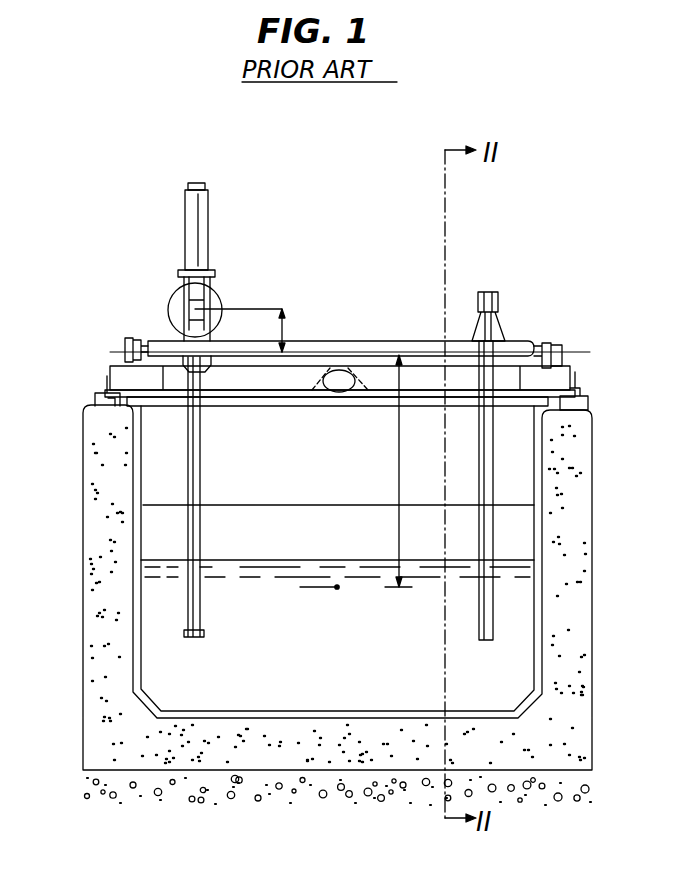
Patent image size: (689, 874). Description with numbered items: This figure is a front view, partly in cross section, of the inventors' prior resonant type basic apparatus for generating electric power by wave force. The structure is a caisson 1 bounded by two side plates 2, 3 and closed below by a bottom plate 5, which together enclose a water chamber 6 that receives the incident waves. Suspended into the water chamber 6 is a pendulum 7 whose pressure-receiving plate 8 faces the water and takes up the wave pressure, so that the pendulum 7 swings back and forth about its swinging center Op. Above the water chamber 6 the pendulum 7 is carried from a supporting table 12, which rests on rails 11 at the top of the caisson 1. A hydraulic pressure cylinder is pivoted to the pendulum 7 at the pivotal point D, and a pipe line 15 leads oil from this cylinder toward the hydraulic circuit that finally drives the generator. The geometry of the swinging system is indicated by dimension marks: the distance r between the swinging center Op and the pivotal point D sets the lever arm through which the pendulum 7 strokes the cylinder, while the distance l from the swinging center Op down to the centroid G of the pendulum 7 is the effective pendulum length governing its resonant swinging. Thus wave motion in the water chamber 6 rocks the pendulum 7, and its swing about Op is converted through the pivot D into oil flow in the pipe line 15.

The caisson 1 is at (338, 630).
The side plate 2 is at (577, 523).
The side plate 3 is at (103, 508).
The bottom plate 5 is at (185, 752).
The water chamber 6 is at (302, 655).
The pendulum 7 is at (201, 464).
The pressure-receiving plate 8 is at (152, 603).
The rails 11 is at (105, 390).
The supporting table 12 is at (110, 366).
The pipe line 15 is at (207, 214).
The pivotal point D is at (193, 306).
The swinging center Op is at (117, 350).
The distance between swinging center and pivotal point r is at (293, 332).
The distance of swinging center from centroid l is at (399, 471).
The centroid of the pendulum G is at (323, 602).